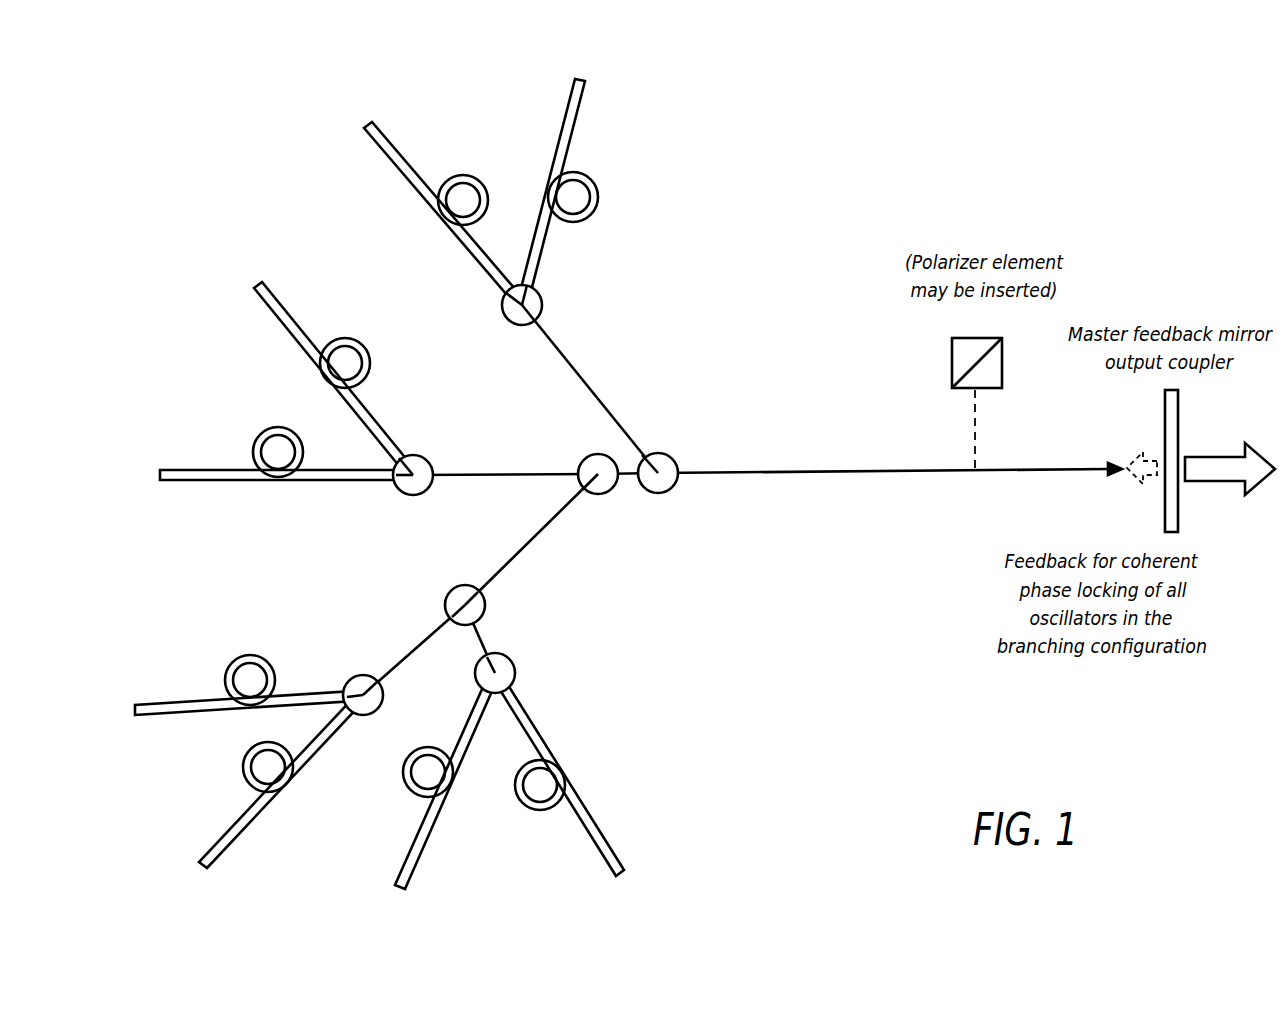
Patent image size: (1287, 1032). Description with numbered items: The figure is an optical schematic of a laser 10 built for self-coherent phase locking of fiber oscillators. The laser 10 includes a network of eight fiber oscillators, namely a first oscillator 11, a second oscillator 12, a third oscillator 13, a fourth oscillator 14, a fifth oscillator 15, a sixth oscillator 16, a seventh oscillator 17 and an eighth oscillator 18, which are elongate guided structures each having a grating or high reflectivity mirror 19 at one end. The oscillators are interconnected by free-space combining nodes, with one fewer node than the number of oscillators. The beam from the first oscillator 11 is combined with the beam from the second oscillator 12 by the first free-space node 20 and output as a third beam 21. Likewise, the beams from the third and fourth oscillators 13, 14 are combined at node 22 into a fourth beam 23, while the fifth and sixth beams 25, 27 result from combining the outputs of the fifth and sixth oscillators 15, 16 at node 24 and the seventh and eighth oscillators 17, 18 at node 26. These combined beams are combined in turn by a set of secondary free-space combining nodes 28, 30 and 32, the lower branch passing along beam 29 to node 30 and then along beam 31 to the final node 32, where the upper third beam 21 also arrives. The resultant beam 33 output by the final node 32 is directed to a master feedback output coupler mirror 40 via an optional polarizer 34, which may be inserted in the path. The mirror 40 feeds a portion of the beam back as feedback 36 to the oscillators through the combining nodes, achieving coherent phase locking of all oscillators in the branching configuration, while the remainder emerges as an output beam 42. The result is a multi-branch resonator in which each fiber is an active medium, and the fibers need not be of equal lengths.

The laser 10 is at (985, 198).
The first oscillator 11 is at (565, 118).
The second oscillator 12 is at (403, 150).
The third oscillator 13 is at (292, 307).
The fourth oscillator 14 is at (198, 468).
The fifth oscillator 15 is at (150, 705).
The sixth oscillator 16 is at (230, 832).
The seventh oscillator 17 is at (420, 860).
The eighth oscillator 18 is at (592, 841).
The grating or high reflectivity mirror 19 is at (382, 136).
The first free-space node 20 is at (532, 290).
The third beam 21 is at (588, 387).
The free-space combining node 22 is at (412, 455).
The fourth beam 23 is at (487, 476).
The free-space combining node 24 is at (353, 678).
The fifth beam 25 is at (422, 640).
The free-space combining node 26 is at (514, 667).
The sixth beam 27 is at (472, 642).
The secondary free-space combining node 28 is at (460, 585).
The beam 29 is at (530, 540).
The secondary free-space combining node 30 is at (585, 455).
The beam 31 is at (628, 486).
The final node 32 is at (672, 455).
The resultant beam 33 is at (852, 474).
The polarizer 34 is at (950, 358).
The feedback 36 is at (1140, 487).
The master feedback output coupler mirror 40 is at (1179, 420).
The output beam 42 is at (1225, 482).